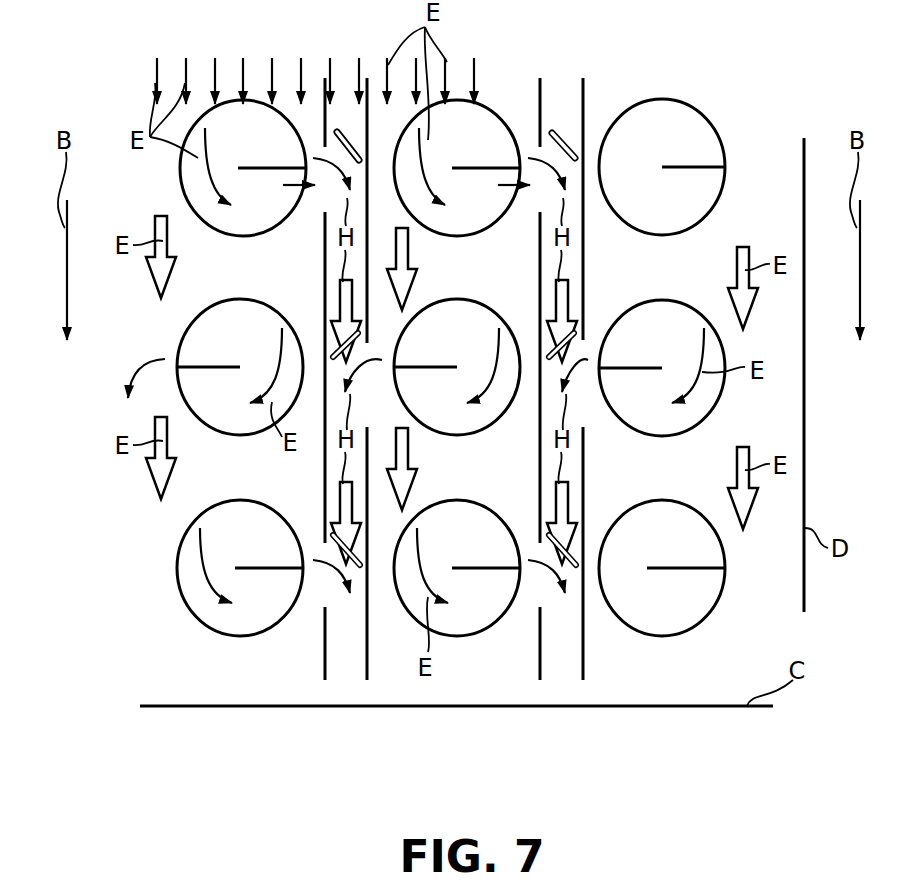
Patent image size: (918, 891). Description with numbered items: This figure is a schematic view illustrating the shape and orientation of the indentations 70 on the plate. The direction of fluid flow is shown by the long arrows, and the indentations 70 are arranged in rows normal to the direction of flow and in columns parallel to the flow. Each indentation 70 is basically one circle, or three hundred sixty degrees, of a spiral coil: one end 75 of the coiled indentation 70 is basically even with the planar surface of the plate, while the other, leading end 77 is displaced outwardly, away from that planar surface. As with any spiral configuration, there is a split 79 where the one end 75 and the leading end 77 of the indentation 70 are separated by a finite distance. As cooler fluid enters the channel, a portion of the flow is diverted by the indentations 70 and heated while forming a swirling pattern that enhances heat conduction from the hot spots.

The indentation 70 is at (449, 359).
The one end 75 is at (286, 149).
The leading end 77 is at (497, 256).
The split 79 is at (256, 167).